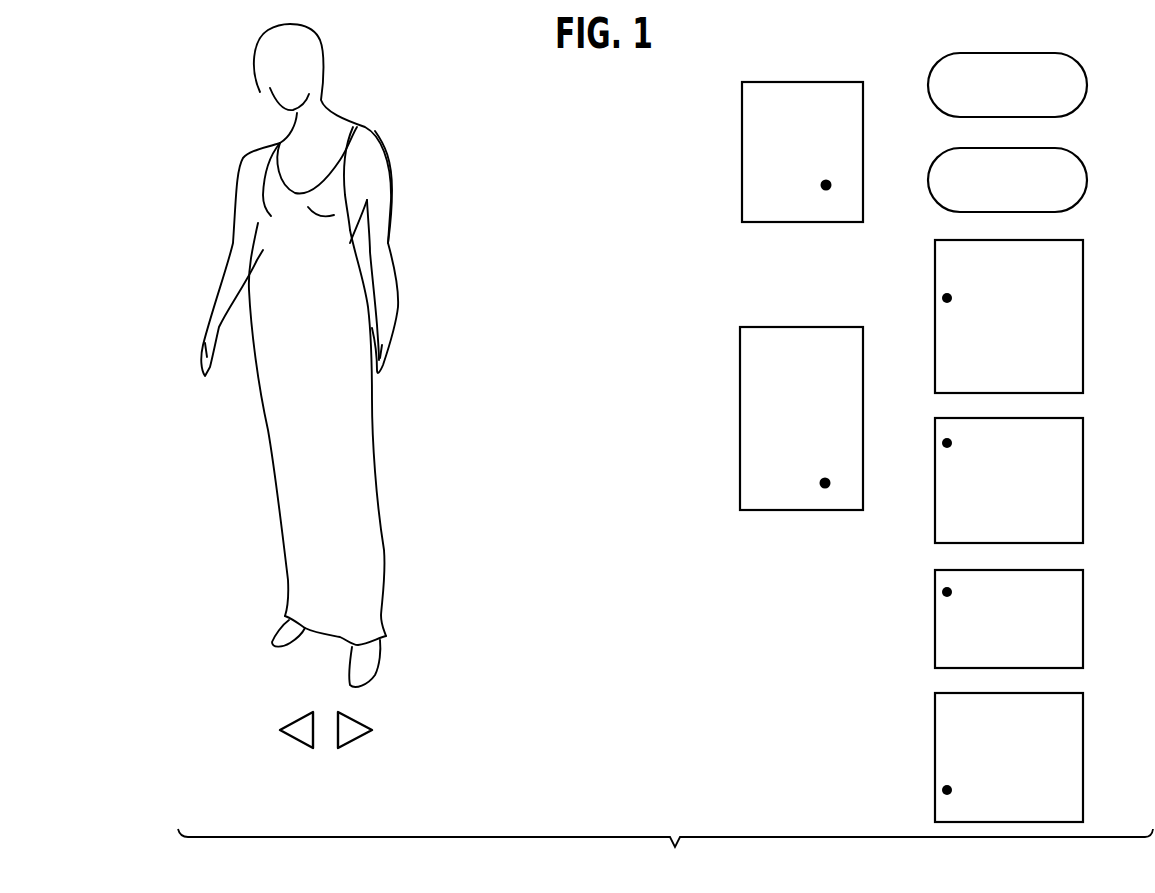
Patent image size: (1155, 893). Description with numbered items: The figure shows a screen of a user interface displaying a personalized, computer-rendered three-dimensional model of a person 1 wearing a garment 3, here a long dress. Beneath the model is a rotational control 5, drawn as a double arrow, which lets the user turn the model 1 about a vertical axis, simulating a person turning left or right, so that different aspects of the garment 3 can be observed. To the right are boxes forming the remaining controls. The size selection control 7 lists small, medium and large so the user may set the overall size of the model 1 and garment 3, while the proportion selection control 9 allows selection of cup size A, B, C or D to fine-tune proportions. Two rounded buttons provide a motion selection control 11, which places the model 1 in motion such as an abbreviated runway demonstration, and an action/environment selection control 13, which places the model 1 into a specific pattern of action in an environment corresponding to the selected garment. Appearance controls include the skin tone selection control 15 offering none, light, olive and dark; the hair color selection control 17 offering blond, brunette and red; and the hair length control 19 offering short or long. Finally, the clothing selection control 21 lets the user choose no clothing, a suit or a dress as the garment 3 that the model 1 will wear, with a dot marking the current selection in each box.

The model 1 is at (333, 113).
The garment 3 is at (374, 458).
The rotational control 5 is at (371, 718).
The size selection control 7 is at (840, 82).
The proportion selection control 9 is at (840, 327).
The motion selection control 11 is at (1088, 74).
The action/environment selection control 13 is at (1088, 168).
The skin tone selection control 15 is at (1085, 257).
The hair color selection control 17 is at (1085, 437).
The hair length control 19 is at (1085, 585).
The clothing selection control 21 is at (1085, 713).